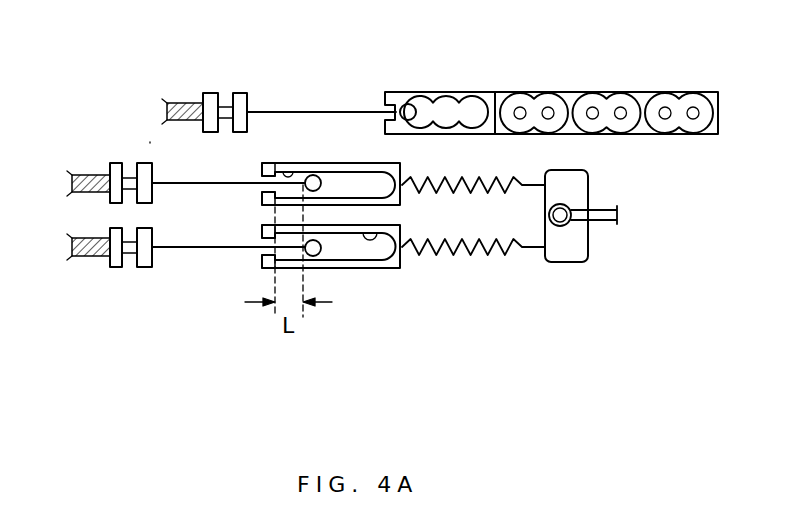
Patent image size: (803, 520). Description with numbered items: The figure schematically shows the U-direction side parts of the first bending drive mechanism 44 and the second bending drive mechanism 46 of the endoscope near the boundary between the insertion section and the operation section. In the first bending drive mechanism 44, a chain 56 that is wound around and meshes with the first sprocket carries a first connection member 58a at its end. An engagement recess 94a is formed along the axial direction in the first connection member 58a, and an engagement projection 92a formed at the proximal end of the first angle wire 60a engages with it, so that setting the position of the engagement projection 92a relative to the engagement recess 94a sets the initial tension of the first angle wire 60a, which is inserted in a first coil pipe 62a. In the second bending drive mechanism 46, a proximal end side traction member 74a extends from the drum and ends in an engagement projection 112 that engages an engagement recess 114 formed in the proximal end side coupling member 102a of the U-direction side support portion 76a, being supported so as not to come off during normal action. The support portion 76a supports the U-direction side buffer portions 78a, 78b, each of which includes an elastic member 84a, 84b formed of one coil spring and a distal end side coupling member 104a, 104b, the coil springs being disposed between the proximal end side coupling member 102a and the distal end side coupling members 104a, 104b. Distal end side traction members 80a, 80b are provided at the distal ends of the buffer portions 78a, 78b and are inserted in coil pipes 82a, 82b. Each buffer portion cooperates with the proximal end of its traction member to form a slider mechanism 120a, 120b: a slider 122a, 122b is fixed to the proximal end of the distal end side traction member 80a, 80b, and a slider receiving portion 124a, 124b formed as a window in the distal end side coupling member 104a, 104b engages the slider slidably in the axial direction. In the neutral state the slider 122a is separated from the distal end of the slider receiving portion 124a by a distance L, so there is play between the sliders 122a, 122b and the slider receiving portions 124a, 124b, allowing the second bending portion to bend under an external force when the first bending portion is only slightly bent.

The first bending drive mechanism 44 is at (551, 71).
The chain 56 is at (632, 95).
The first connection member 58a is at (459, 79).
The engagement recess 94a is at (446, 96).
The engagement projection 92a is at (408, 102).
The first angle wire 60a is at (360, 108).
The first coil pipe 62a is at (185, 100).
The second bending drive mechanism 46 is at (153, 148).
The coil pipe 82a is at (90, 172).
The coil pipe 82b is at (92, 258).
The distal end side traction member 80a is at (182, 186).
The distal end side traction member 80b is at (180, 250).
The U-direction side buffer portion 78a is at (367, 116).
The U-direction side buffer portion 78b is at (371, 290).
The slider mechanism 120a is at (295, 116).
The slider mechanism 120b is at (334, 290).
The distal end side coupling member 104a is at (262, 170).
The distal end side coupling member 104b is at (262, 264).
The slider 122a is at (311, 175).
The slider 122b is at (316, 256).
The slider receiving portion 124a is at (282, 170).
The slider receiving portion 124b is at (372, 240).
The elastic member 84a is at (490, 178).
The elastic member 84b is at (412, 272).
The proximal end side coupling member 102a is at (593, 255).
The U-direction side support portion 76a is at (578, 258).
The engagement recess 114 is at (556, 226).
The engagement projection 112 is at (565, 222).
The proximal end side traction member 74a is at (618, 222).